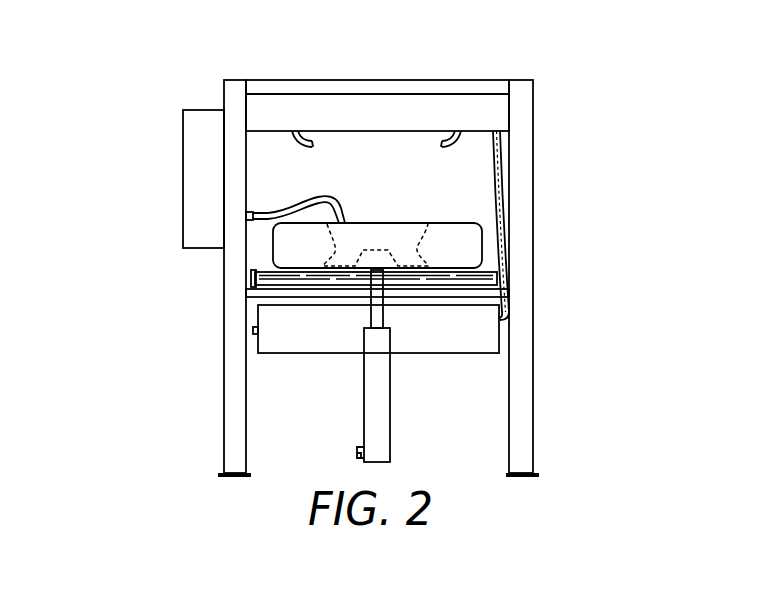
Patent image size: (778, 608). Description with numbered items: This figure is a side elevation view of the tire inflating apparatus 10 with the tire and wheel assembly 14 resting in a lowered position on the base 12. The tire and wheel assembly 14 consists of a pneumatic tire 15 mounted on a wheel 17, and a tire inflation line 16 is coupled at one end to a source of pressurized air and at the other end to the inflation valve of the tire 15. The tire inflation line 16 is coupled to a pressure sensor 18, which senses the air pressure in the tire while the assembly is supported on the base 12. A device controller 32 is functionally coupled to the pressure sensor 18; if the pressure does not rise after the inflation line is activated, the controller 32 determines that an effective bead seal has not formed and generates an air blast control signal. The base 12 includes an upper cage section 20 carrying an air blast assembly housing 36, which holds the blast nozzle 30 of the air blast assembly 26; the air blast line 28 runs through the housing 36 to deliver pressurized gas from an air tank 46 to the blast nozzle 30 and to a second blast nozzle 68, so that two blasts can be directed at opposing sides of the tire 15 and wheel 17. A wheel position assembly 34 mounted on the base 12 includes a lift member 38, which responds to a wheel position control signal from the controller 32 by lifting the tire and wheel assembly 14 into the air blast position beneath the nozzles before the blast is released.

The apparatus 10 is at (138, 441).
The base 12 is at (237, 312).
The tire and wheel assembly 14 is at (468, 235).
The pneumatic tire 15 is at (465, 254).
The tire inflation line 16 is at (292, 208).
The wheel 17 is at (378, 222).
The pressure sensor 18 is at (246, 215).
The upper cage section 20 is at (477, 85).
The air blast assembly 26 is at (385, 74).
The air blast line 28 is at (503, 163).
The air blast nozzle 30 is at (450, 140).
The device controller 32 is at (200, 120).
The wheel position assembly 34 is at (373, 418).
The air blast assembly housing 36 is at (487, 108).
The lift member 38 is at (380, 432).
The air tank 46 is at (482, 335).
The second blast nozzle 68 is at (312, 140).